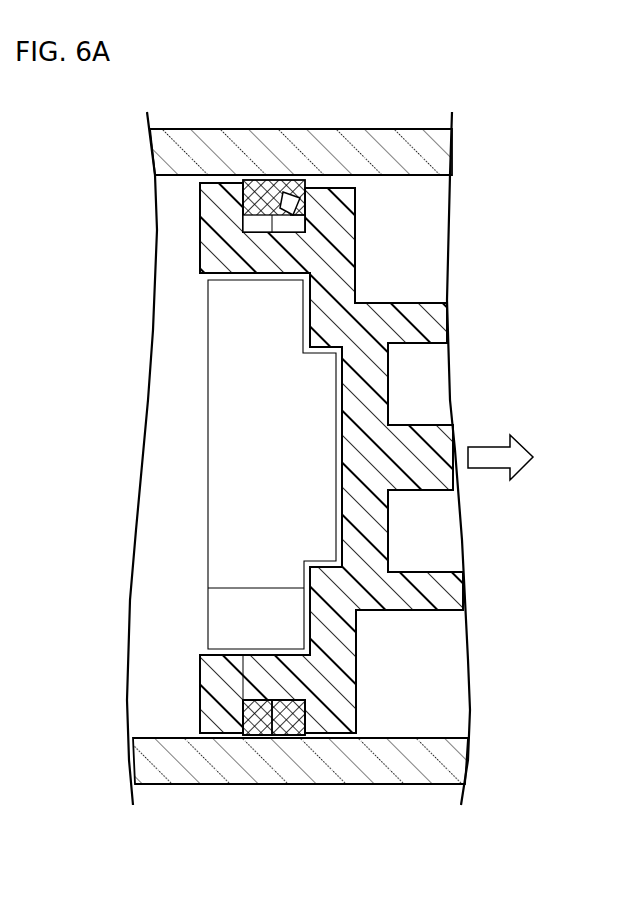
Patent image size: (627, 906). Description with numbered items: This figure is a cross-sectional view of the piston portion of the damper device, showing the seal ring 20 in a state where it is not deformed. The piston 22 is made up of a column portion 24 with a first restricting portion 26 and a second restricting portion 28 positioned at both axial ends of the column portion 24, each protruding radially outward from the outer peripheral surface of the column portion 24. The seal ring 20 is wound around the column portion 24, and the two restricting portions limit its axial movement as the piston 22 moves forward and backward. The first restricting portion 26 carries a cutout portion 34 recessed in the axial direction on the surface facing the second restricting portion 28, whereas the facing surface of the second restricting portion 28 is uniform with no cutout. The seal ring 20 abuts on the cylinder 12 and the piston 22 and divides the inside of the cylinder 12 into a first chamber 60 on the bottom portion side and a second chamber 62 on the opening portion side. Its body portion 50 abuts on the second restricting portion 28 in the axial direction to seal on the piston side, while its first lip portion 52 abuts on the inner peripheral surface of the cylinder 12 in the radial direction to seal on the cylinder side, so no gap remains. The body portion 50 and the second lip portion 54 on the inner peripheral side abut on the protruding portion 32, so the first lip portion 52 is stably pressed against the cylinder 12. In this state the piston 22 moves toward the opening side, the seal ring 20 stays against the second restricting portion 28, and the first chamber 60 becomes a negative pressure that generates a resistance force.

The cylinder 12 is at (392, 130).
The first restricting portion 26 is at (340, 745).
The first chamber 60 is at (162, 208).
The second chamber 62 is at (420, 185).
The column portion 24 is at (270, 232).
The piston 22 is at (241, 285).
The body portion 50 is at (246, 183).
The first lip portion 52 is at (292, 185).
The second lip portion 54 is at (305, 217).
The seal ring 20 is at (270, 730).
The second restricting portion 28 is at (212, 742).
The cutout portion 34 is at (330, 742).
The protruding portion 32 is at (262, 678).